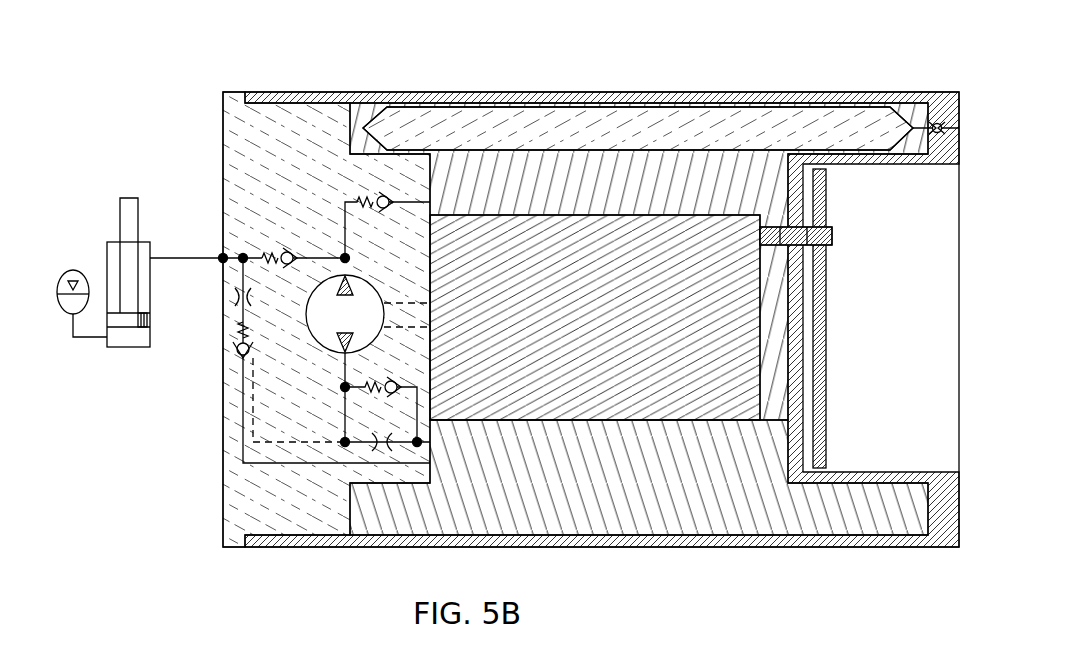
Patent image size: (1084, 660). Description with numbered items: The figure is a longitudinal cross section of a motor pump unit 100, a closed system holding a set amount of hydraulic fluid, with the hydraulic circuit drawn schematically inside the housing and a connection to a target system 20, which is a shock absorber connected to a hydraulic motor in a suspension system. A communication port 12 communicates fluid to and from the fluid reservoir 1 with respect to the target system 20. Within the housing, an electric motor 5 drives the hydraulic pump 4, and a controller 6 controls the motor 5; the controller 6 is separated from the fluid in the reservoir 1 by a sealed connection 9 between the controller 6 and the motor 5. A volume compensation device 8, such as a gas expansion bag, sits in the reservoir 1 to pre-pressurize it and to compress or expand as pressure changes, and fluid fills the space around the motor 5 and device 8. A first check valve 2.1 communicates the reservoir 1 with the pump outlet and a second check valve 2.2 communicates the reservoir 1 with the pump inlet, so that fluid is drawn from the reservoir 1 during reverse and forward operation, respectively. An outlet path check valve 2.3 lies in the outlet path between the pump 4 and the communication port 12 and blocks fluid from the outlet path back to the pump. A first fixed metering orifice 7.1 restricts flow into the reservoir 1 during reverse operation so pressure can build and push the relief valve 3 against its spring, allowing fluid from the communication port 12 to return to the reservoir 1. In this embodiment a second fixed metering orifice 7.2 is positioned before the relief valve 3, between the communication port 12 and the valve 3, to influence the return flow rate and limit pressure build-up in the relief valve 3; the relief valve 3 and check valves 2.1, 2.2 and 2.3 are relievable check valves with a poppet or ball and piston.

The motor pump unit 100 is at (293, 133).
The fluid reservoir 1 is at (724, 197).
The electric motor 5 is at (722, 269).
The volume compensation device 8 is at (856, 144).
The controller 6 is at (827, 312).
The sealed connection 9 is at (832, 236).
The target system 20 is at (112, 197).
The communication port 12 is at (221, 257).
The outlet path check valve 2.3 is at (288, 251).
The first check valve 2.1 is at (382, 212).
The second fixed metering orifice 7.2 is at (233, 295).
The relief valve 3 is at (233, 346).
The hydraulic pump 4 is at (351, 327).
The second check valve 2.2 is at (390, 393).
The first fixed metering orifice 7.1 is at (380, 452).